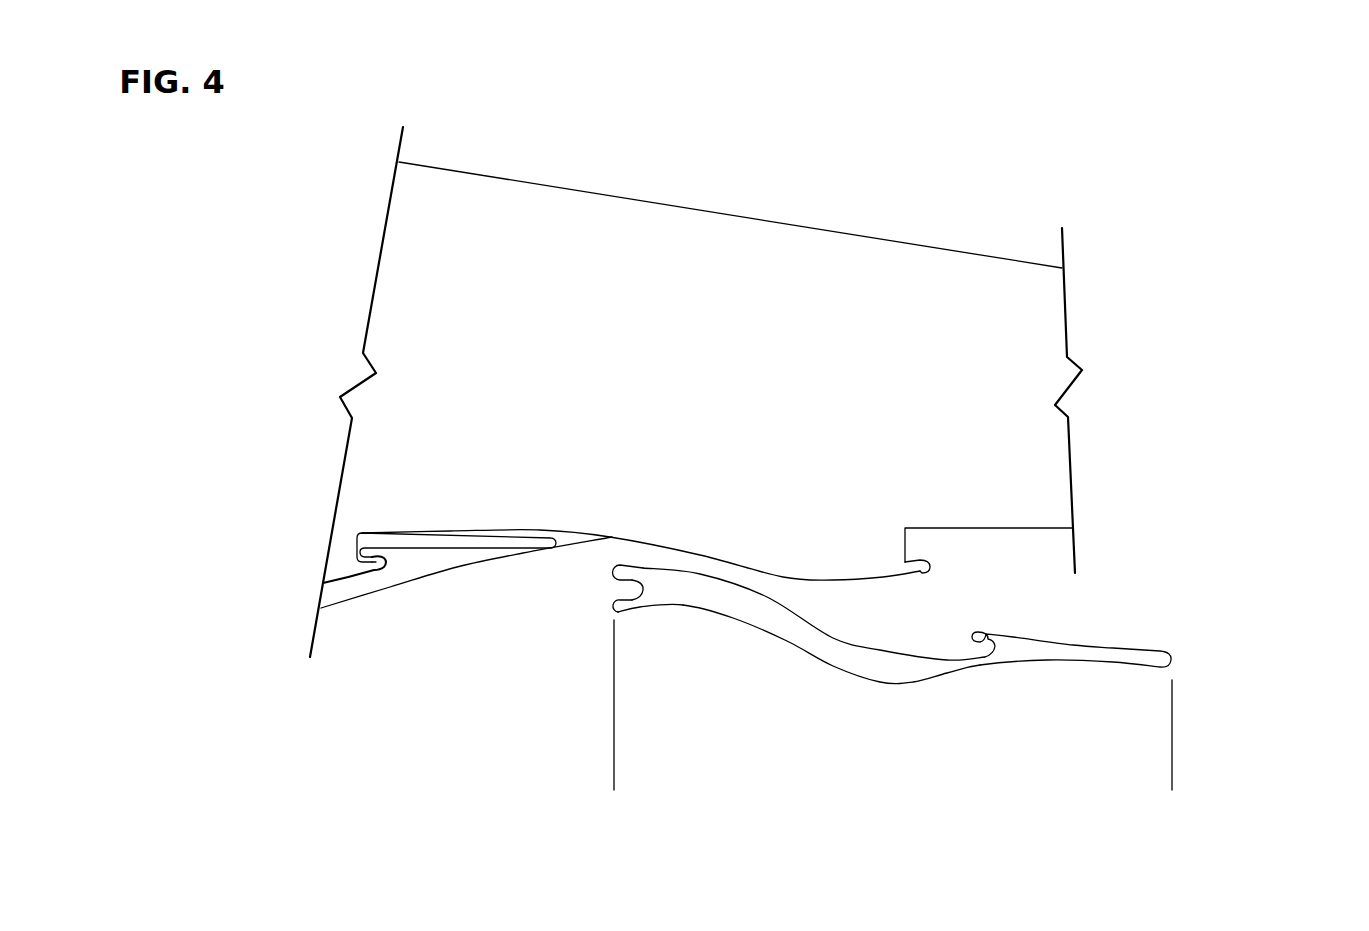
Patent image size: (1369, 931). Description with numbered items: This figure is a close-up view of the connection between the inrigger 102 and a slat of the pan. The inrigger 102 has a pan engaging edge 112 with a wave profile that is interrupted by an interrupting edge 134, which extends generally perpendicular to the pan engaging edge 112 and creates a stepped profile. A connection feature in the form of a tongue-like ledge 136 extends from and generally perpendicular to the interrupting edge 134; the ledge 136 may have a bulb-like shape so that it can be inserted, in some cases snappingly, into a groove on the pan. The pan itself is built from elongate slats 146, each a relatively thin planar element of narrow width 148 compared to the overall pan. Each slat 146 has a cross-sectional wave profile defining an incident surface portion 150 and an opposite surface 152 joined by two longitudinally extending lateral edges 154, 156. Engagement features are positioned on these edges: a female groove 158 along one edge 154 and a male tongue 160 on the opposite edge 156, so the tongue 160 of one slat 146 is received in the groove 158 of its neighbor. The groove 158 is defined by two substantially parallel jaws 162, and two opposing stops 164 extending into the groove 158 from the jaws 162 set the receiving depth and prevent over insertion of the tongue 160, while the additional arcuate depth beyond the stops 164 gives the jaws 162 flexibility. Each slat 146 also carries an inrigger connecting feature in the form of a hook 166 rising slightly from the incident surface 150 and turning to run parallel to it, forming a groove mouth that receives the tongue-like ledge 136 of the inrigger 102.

The inrigger 102 is at (1155, 282).
The pan engaging edge 112 is at (588, 540).
The interrupting edge 134 is at (358, 547).
The connection feature (tongue-like ledge) 136 is at (383, 560).
The elongate slat 146 is at (1080, 640).
The width 148 is at (614, 758).
The incident surface portion 150 is at (868, 648).
The opposite surface 152 is at (790, 642).
The longitudinally extending lateral edge 154 is at (592, 590).
The longitudinally extending lateral edge 156 is at (1185, 655).
The groove 158 is at (637, 617).
The tongue 160 is at (1147, 666).
The jaws 162 is at (622, 570).
The stops 164 is at (632, 590).
The inrigger connecting feature (hook) 166 is at (988, 634).